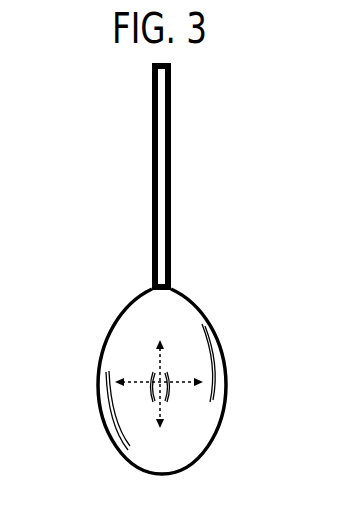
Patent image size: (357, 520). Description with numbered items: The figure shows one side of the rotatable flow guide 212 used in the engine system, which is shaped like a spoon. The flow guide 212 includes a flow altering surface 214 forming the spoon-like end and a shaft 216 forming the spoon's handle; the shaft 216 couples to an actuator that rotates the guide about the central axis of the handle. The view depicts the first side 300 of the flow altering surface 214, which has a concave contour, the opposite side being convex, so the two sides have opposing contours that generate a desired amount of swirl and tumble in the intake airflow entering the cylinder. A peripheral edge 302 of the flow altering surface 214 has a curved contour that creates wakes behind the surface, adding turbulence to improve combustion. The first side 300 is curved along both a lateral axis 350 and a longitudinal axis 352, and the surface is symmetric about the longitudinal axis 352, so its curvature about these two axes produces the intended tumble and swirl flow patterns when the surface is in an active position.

The rotatable flow guide 212 is at (247, 106).
The flow altering surface 214 is at (93, 283).
The shaft 216 is at (143, 62).
The first side 300 is at (169, 329).
The peripheral edge 302 is at (205, 446).
The lateral axis 350 is at (148, 378).
The longitudinal axis 352 is at (167, 375).